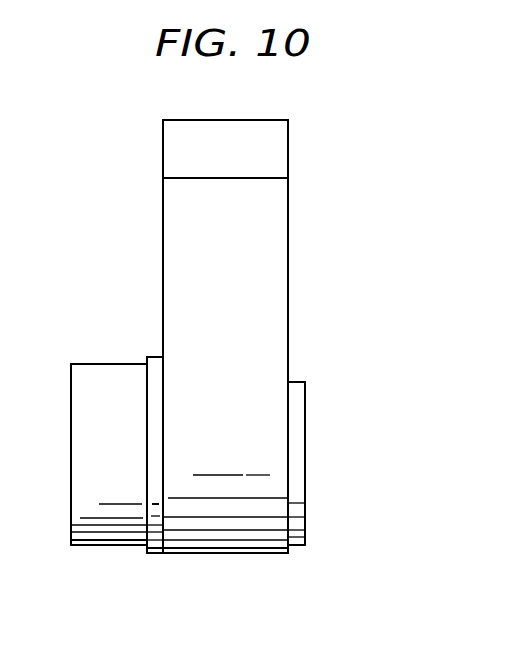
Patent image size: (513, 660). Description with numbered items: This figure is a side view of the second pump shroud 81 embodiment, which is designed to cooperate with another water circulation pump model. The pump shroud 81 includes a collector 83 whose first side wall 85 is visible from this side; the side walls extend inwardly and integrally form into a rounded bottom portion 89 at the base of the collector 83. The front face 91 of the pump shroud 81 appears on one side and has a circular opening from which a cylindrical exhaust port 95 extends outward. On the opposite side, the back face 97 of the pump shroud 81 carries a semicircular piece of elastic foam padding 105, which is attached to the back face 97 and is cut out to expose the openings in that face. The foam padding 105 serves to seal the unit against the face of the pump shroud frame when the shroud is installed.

The pump shroud 81 is at (160, 180).
The collector 83 is at (265, 262).
The first side wall 85 is at (273, 330).
The rounded bottom portion 89 is at (231, 543).
The front face 91 is at (162, 297).
The cylindrical exhaust port 95 is at (88, 446).
The back face 97 is at (290, 191).
The elastic foam padding 105 is at (305, 440).